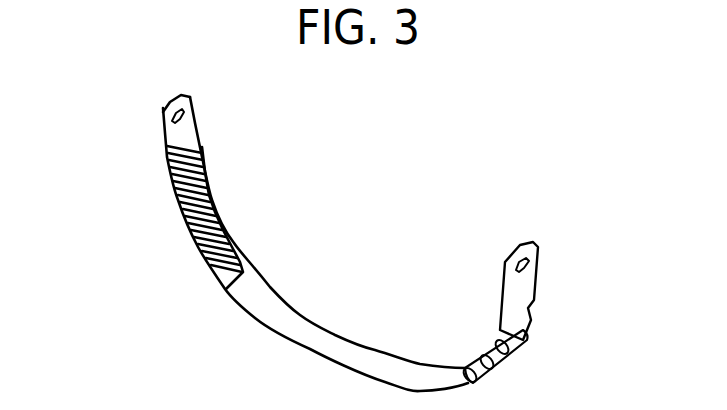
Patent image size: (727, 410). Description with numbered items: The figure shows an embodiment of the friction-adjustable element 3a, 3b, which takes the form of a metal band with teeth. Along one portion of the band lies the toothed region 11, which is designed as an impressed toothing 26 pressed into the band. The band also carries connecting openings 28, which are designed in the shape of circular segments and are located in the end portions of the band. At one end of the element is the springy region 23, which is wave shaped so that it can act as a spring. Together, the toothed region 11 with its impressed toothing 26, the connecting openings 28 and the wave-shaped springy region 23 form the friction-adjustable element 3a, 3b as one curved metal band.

The friction-adjustable element 3a is at (327, 244).
The friction-adjustable element 3b is at (318, 320).
The toothed region 11 is at (271, 194).
The impressed toothing 26 is at (205, 193).
The connecting openings 28 is at (163, 125).
The springy region 23 is at (545, 337).